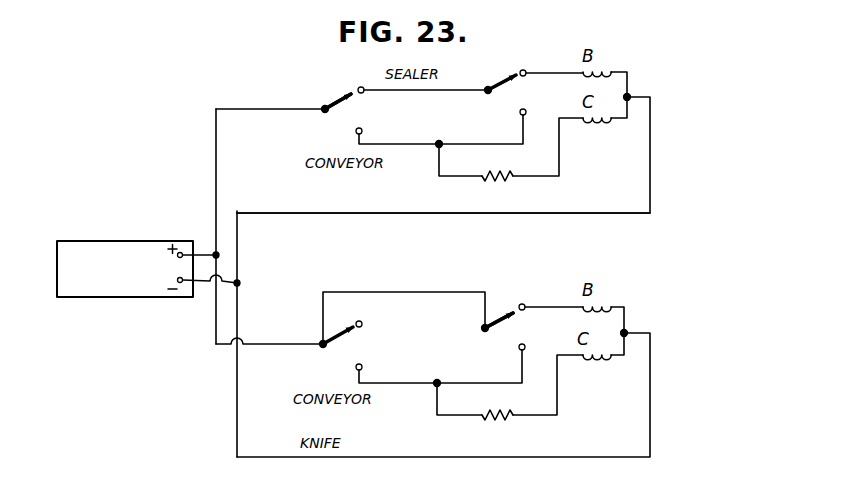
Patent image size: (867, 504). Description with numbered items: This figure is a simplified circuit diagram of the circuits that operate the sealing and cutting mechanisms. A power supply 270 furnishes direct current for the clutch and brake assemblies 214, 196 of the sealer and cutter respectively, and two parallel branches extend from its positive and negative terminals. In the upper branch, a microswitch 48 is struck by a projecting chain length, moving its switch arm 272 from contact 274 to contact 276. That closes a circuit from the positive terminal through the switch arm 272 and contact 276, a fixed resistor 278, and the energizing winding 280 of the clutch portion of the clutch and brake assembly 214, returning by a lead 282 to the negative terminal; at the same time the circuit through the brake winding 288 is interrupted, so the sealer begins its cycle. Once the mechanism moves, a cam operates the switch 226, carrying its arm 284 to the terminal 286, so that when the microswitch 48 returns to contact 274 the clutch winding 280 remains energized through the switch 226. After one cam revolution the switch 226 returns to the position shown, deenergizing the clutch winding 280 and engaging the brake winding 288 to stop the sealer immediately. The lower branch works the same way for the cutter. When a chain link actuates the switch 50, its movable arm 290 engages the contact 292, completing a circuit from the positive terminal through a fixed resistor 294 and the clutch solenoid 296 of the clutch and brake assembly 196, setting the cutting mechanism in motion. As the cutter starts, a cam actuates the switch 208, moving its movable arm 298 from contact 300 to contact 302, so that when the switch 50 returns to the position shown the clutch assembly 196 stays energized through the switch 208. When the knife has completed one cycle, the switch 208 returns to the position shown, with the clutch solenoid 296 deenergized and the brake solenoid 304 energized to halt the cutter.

The power supply 270 is at (96, 241).
The microswitch 48 is at (320, 106).
The switch arm 272 is at (336, 96).
The contact 274 is at (366, 92).
The contact 276 is at (365, 131).
The switch 226 is at (511, 101).
The arm 284 is at (500, 65).
The terminal 286 is at (529, 110).
The brake winding 288 is at (604, 72).
The energizing winding 280 is at (593, 122).
The clutch and brake assembly 214 is at (634, 95).
The fixed resistor 278 is at (503, 180).
The lead 282 is at (372, 212).
The switch 50 is at (318, 340).
The movable arm 290 is at (337, 333).
The contact 292 is at (364, 367).
The switch 208 is at (480, 332).
The movable arm 298 is at (504, 314).
The contact 300 is at (525, 310).
The contact 302 is at (524, 346).
The brake solenoid 304 is at (604, 306).
The clutch solenoid 296 is at (589, 359).
The clutch and brake assembly 196 is at (629, 315).
The fixed resistor 294 is at (499, 421).